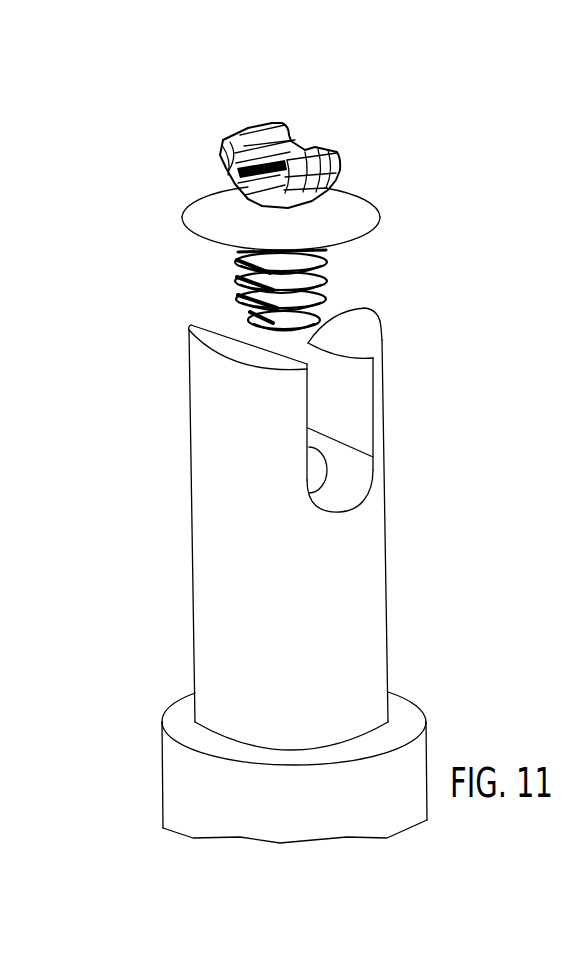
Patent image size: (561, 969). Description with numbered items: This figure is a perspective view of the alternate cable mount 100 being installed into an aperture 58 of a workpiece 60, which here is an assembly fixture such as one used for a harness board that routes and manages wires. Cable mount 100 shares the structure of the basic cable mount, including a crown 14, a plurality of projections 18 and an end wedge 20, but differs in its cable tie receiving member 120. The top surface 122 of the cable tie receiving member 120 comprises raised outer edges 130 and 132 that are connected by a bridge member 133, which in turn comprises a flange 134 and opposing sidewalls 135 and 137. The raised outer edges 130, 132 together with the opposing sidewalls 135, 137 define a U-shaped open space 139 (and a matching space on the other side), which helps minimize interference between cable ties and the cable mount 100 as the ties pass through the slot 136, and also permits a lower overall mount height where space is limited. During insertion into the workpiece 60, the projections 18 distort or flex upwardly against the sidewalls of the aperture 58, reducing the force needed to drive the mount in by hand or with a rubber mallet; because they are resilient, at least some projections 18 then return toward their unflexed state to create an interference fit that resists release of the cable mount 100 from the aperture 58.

The crown 14 is at (355, 203).
The projections 18 is at (343, 283).
The end wedge 20 is at (373, 358).
The aperture 58 is at (319, 468).
The workpiece 60 is at (393, 573).
The cable mount 100 is at (363, 148).
The cable tie receiving member 120 is at (212, 156).
The top surface 122 is at (237, 132).
The raised outer edge 130 is at (280, 125).
The raised outer edge 132 is at (330, 163).
The bridge member 133 is at (300, 147).
The flange 134 is at (304, 153).
The sidewall 135 is at (230, 173).
The slot 136 is at (257, 207).
The sidewall 137 is at (294, 138).
The open space 139 is at (233, 183).